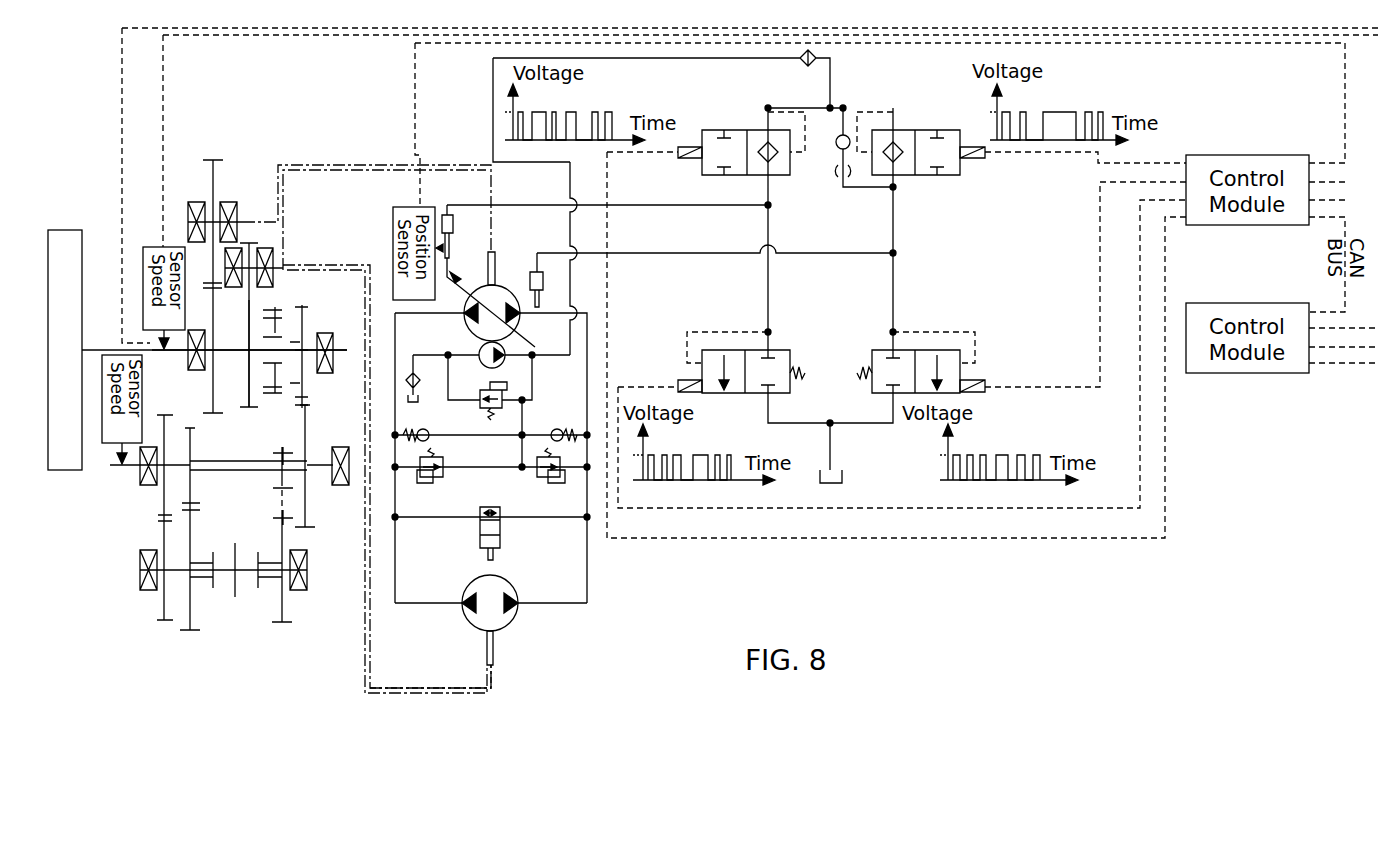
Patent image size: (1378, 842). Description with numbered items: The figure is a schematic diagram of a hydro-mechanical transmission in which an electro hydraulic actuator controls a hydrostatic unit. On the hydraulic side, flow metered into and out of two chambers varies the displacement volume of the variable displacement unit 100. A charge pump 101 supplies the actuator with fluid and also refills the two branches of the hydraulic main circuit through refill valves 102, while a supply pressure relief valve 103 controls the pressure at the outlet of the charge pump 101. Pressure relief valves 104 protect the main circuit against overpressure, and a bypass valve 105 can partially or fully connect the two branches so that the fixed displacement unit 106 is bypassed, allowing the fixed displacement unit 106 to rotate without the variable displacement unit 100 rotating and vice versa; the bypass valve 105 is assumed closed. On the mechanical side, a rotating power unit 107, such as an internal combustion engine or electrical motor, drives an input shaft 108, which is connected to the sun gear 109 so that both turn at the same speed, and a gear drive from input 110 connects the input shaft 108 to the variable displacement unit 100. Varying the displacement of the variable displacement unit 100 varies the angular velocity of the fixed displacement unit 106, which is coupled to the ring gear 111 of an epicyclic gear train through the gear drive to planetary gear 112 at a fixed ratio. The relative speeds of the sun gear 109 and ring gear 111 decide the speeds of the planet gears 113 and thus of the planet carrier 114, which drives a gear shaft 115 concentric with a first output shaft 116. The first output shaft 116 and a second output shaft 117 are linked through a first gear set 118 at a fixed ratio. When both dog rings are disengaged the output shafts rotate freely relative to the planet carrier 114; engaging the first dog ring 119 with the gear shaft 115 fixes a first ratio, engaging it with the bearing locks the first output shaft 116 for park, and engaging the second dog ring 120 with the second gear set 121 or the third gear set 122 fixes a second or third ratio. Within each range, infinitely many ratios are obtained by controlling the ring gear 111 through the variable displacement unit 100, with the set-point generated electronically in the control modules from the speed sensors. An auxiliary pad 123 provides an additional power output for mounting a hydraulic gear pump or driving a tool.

The variable displacement unit 100 is at (520, 305).
The charge pump 101 is at (506, 352).
The refill valves 102 is at (548, 440).
The supply pressure relief valve 103 is at (508, 386).
The pressure relief valves 104 is at (537, 470).
The bypass valve 105 is at (502, 535).
The fixed displacement unit 106 is at (510, 627).
The rotating power unit 107 is at (66, 231).
The input shaft 108 is at (108, 347).
The sun gear 109 is at (262, 357).
The gear drive from input 110 is at (308, 162).
The ring gear 111 is at (247, 385).
The gear drive to planetary gear 112 is at (448, 685).
The planet gears 113 is at (290, 300).
The planet carrier 114 is at (290, 373).
The gear shaft 115 is at (230, 461).
The first output shaft 116 is at (122, 467).
The second output shaft 117 is at (142, 573).
The first gear set 118 is at (165, 537).
The first dog ring 119 is at (323, 490).
The second dog ring 120 is at (236, 590).
The second gear set 121 is at (192, 540).
The third gear set 122 is at (285, 523).
The auxiliary pad 123 is at (347, 362).